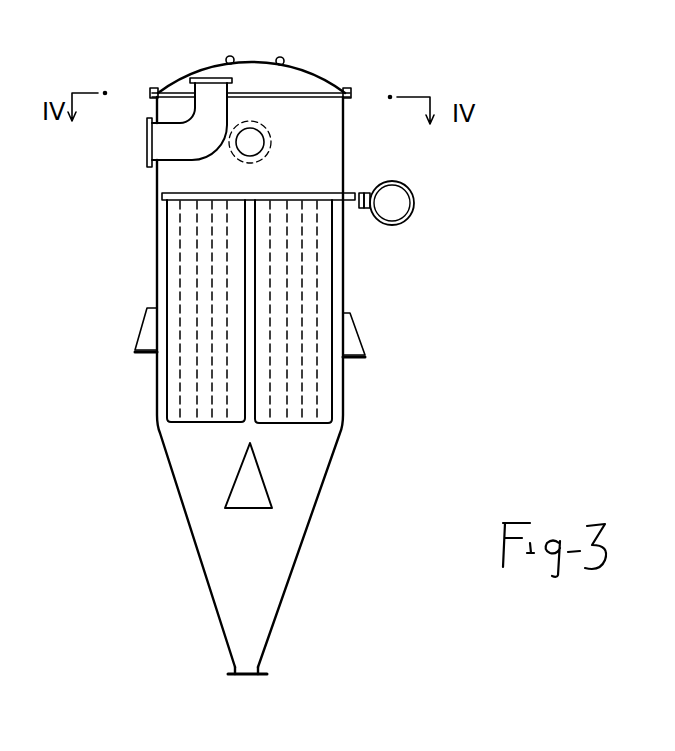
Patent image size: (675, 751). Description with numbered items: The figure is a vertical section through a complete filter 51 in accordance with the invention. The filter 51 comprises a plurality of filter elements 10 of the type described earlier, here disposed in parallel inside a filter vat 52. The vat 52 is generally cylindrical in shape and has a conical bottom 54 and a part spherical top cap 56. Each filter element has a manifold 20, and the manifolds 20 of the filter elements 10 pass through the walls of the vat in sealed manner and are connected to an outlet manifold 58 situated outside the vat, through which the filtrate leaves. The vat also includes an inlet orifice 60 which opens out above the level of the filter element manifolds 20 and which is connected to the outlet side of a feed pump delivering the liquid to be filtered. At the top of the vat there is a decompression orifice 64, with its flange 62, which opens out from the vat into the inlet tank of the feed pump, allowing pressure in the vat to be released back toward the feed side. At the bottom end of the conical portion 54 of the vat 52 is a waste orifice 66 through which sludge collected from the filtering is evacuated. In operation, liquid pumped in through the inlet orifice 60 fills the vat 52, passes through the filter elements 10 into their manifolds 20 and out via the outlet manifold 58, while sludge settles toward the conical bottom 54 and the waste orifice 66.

The filter elements 10 is at (173, 405).
The manifolds 20 is at (278, 198).
The filter 51 is at (152, 275).
The filter vat 52 is at (345, 268).
The conical bottom 54 is at (302, 548).
The part spherical top cap 56 is at (306, 71).
The outlet manifold 58 is at (396, 204).
The inlet orifice 60 is at (252, 141).
The decompression orifice 62 is at (147, 150).
The decompression orifice 64 is at (206, 80).
The waste orifice 66 is at (252, 674).